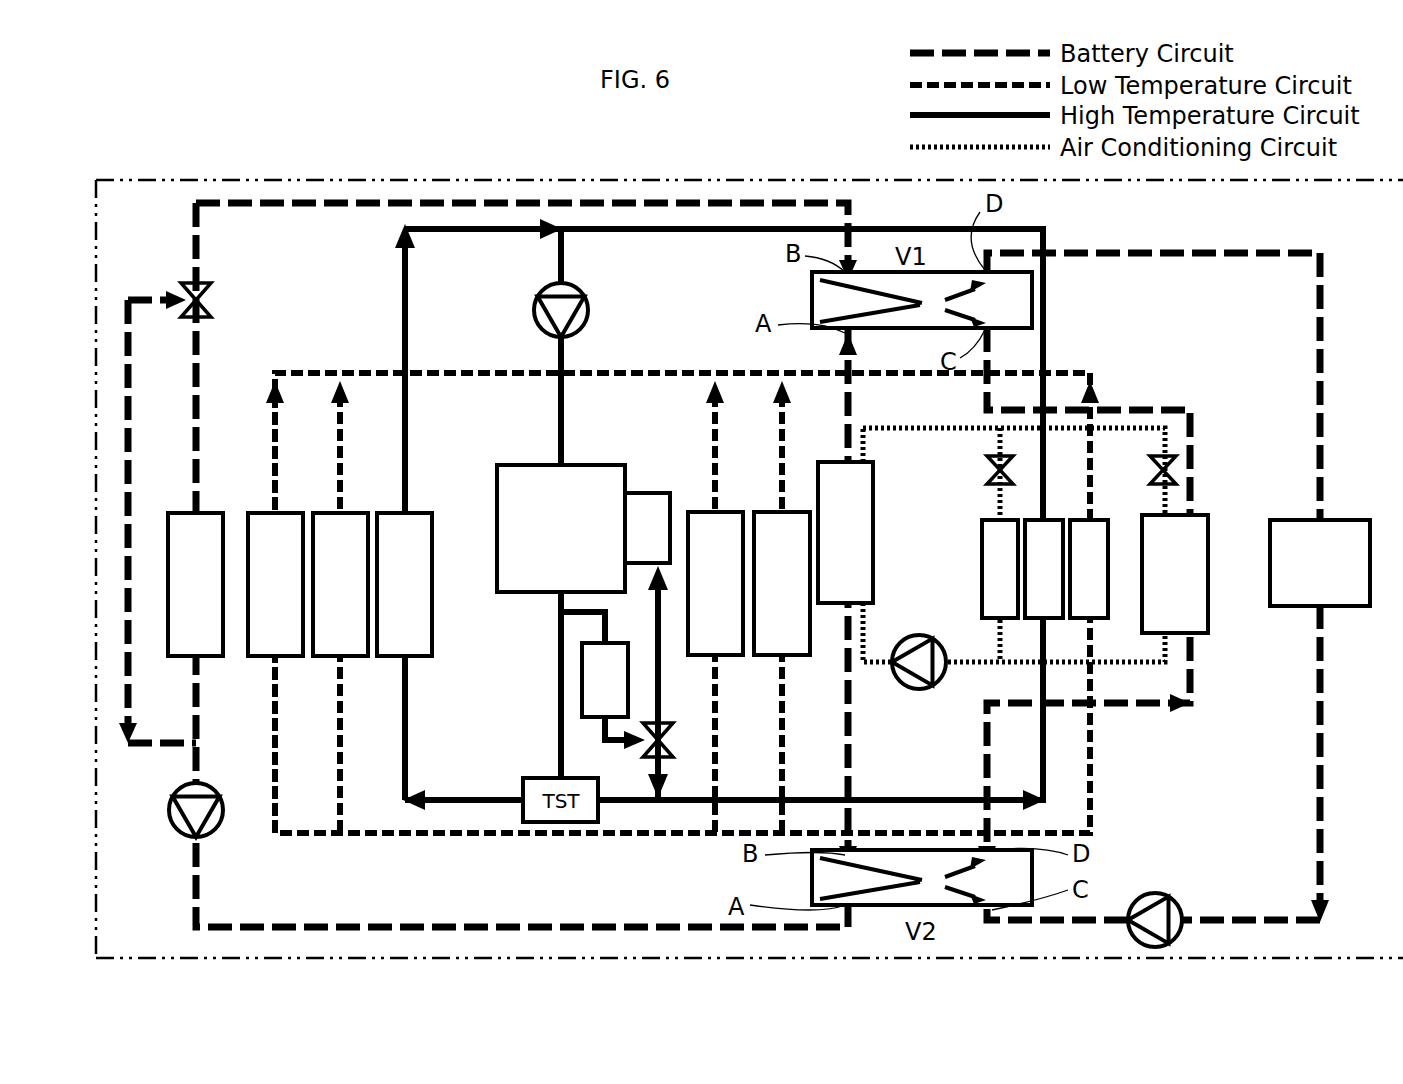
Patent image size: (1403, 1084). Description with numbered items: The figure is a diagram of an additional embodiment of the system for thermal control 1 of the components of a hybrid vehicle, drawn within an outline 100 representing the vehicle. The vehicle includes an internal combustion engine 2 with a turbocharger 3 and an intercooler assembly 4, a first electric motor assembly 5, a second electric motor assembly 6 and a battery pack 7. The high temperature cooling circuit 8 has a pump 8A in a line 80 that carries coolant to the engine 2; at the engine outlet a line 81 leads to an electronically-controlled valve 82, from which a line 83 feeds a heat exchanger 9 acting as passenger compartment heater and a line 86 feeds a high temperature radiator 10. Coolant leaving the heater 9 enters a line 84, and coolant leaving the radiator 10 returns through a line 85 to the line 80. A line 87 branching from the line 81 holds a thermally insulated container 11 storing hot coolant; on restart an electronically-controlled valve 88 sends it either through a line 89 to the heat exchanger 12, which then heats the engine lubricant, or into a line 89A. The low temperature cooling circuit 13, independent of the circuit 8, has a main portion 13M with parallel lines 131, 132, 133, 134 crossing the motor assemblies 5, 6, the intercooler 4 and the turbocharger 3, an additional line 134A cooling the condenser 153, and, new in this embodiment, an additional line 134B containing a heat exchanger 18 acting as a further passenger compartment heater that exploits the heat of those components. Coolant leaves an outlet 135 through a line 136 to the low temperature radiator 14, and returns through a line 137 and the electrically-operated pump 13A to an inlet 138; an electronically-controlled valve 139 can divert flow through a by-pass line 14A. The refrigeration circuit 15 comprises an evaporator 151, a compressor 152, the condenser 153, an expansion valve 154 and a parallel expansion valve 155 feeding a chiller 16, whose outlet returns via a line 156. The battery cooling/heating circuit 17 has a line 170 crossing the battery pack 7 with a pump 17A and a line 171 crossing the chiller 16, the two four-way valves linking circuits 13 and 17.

The system for thermal control 1 is at (208, 130).
The vehicle 100 is at (350, 178).
The line 136 is at (640, 200).
The low temperature cooling circuit 13 is at (190, 252).
The electronically-controlled valve 139 is at (210, 298).
The by-pass line 14A is at (128, 424).
The low temperature radiator 14 is at (175, 522).
The line 137 is at (196, 722).
The outlet 135 is at (855, 380).
The inlet 138 is at (852, 812).
The cooling/heating circuit 17 is at (1328, 385).
The line 170 is at (1322, 460).
The line 171 is at (1130, 706).
The line 156 is at (1118, 665).
The refrigeration circuit 15 is at (1142, 418).
The main portion 13M is at (315, 365).
The line 132 is at (270, 482).
The line 131 is at (335, 430).
The line 133 is at (722, 490).
The line 134 is at (792, 480).
The line 83 is at (980, 800).
The additional line 134B is at (1092, 800).
The high temperature cooling circuit 8 is at (1090, 378).
The line 85 is at (455, 234).
The line 84 is at (878, 229).
The line 80 is at (565, 270).
The electronically-controlled valve 82 is at (540, 778).
The line 86 is at (406, 728).
The line 81 is at (558, 708).
The line 87 is at (575, 615).
The line 89 is at (655, 660).
The line 89A is at (668, 770).
The electronically-controlled valve 88 is at (672, 735).
The condenser 153 is at (866, 525).
The compressor 152 is at (918, 638).
The expansion valve 154 is at (990, 476).
The expansion valve 155 is at (1155, 476).
The pump 13A is at (222, 825).
The pump 8A is at (585, 320).
The electrically-operated pump 17A is at (1172, 905).
The first electric motor assembly 5 is at (265, 655).
The second electric motor assembly 6 is at (330, 655).
The high temperature radiator 10 is at (395, 655).
The internal combustion engine 2 is at (497, 492).
The heat exchanger 12 is at (650, 488).
The intercooler assembly 4 is at (730, 655).
The turbocharger 3 is at (795, 655).
The additional line 134A is at (850, 700).
The thermally insulated container 11 is at (580, 690).
The evaporator 151 is at (980, 545).
The heat exchanger 9 is at (1048, 535).
The heat exchanger 18 is at (1105, 620).
The heat exchanger 16 is at (1205, 540).
The battery pack 7 is at (1333, 606).